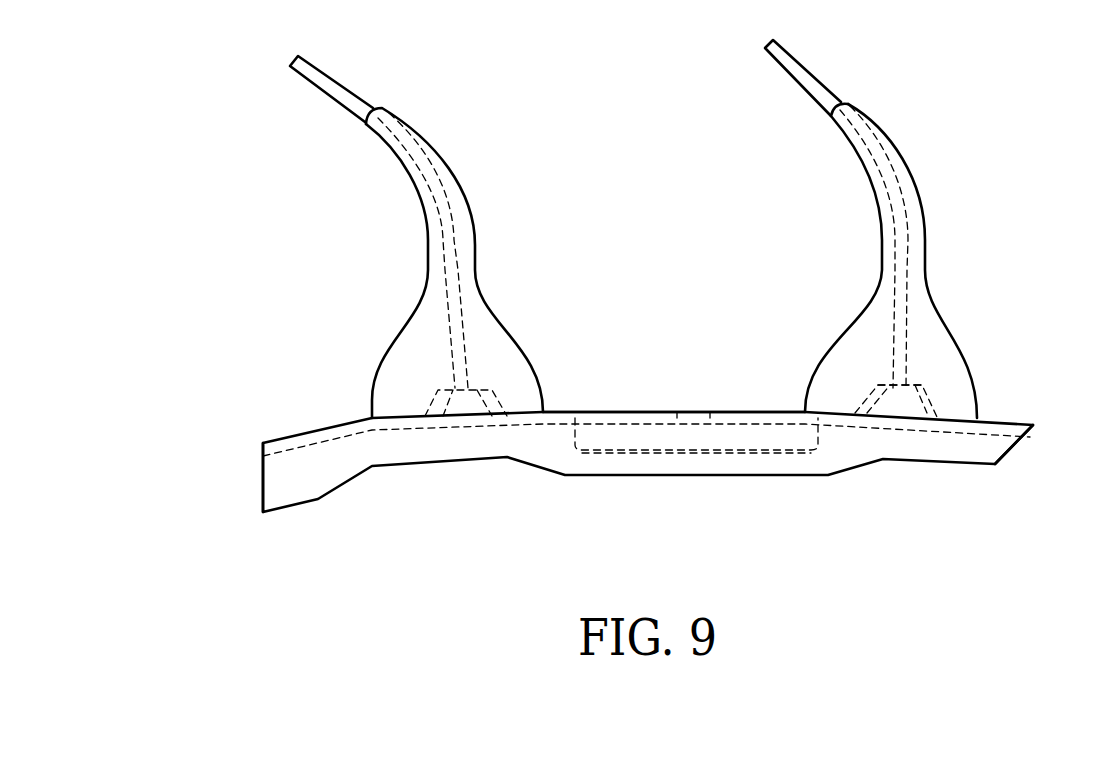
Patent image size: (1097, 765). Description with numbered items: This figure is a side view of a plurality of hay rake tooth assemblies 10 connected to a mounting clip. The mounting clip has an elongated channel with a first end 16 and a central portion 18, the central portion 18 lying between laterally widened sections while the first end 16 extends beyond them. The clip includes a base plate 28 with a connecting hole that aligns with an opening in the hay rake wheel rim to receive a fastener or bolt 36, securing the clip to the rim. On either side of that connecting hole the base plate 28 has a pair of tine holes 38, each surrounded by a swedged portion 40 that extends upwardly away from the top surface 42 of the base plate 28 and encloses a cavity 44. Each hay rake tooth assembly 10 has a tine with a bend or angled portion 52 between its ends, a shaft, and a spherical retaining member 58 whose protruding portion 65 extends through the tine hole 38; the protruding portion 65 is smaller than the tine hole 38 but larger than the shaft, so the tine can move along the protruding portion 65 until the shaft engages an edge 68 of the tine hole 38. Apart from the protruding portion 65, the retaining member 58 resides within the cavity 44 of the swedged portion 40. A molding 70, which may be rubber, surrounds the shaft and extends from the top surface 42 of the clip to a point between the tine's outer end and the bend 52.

The hay rake tooth assembly 10 is at (967, 83).
The first end 16 is at (263, 478).
The central portion 18 is at (1017, 448).
The base plate 28 is at (570, 457).
The fastener or bolt 36 is at (693, 412).
The tine holes 38 is at (913, 397).
The swedged portion 40 is at (500, 397).
The top surface 42 is at (612, 412).
The cavity 44 is at (460, 402).
The bend or angled portion 52 is at (896, 173).
The retaining member 58 is at (917, 401).
The protruding portion 65 is at (887, 383).
The edge 68 is at (870, 380).
The molding 70 is at (923, 240).